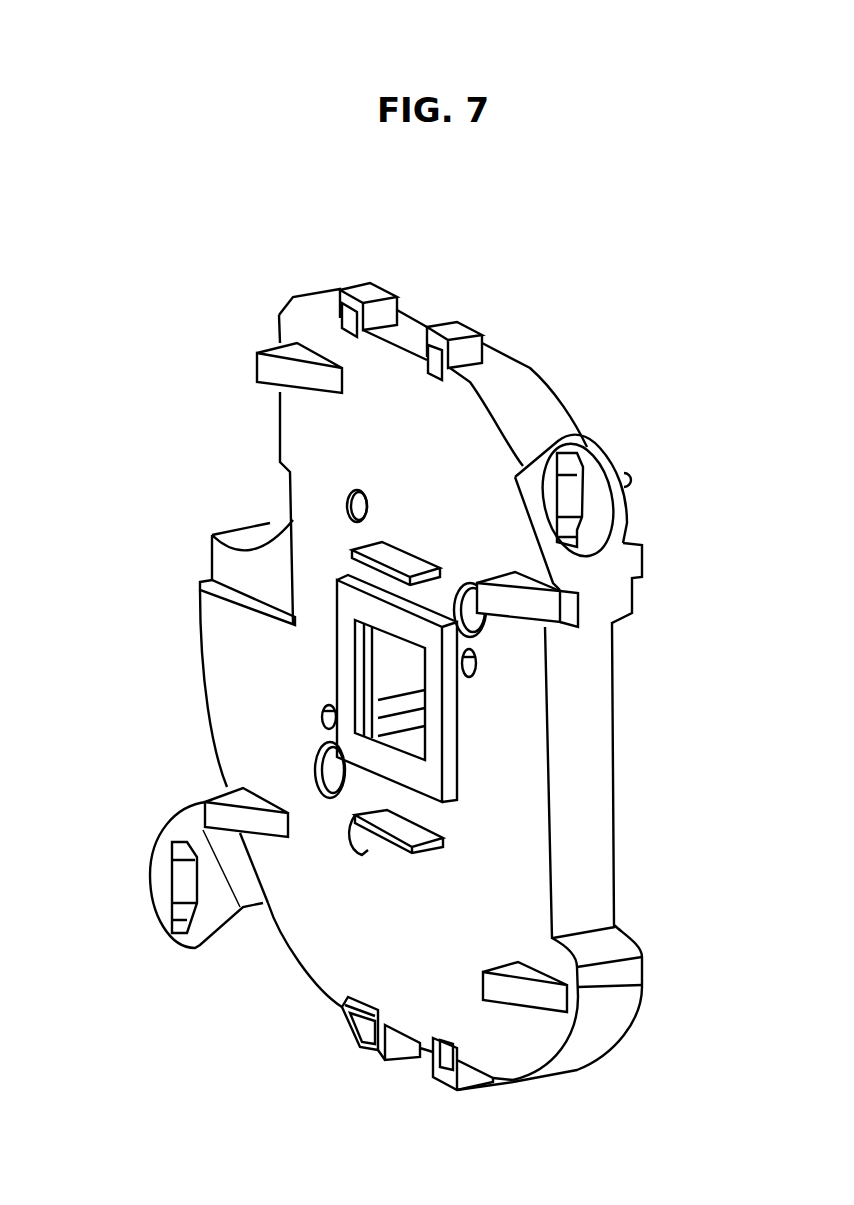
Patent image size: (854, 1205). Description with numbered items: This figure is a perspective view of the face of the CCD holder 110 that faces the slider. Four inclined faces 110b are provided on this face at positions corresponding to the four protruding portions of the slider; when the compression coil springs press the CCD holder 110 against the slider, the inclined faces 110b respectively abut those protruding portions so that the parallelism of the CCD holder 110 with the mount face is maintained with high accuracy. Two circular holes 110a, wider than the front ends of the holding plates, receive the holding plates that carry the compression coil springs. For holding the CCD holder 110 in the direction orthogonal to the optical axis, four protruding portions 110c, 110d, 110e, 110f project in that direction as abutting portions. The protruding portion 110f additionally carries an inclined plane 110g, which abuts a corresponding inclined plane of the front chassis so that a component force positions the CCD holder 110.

The CCD holder 110 is at (421, 689).
The holes 110a is at (563, 490).
The inclined faces 110b is at (313, 377).
The protruding portion (abutting portion) 110c is at (460, 328).
The protruding portion (abutting portion) 110d is at (373, 290).
The protruding portion (abutting portion) 110e is at (447, 1088).
The protruding portion (abutting portion) 110f is at (377, 1060).
The inclined plane 110g is at (352, 1037).